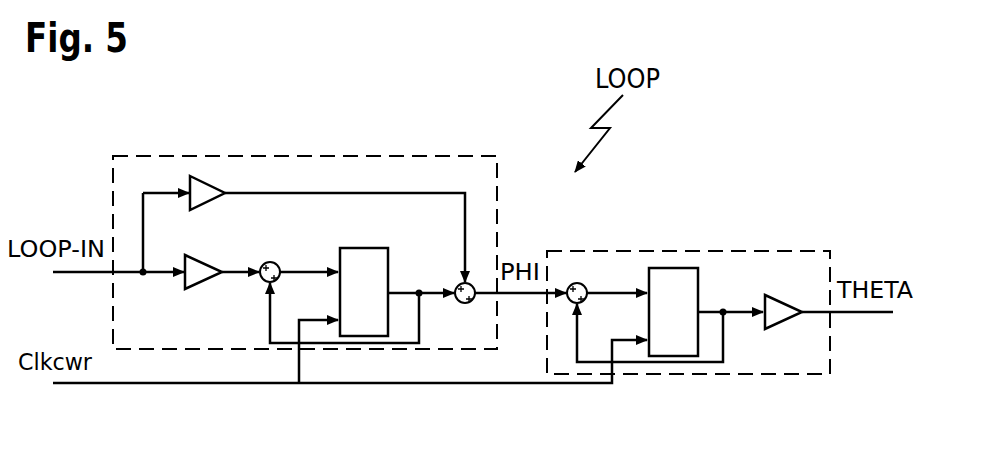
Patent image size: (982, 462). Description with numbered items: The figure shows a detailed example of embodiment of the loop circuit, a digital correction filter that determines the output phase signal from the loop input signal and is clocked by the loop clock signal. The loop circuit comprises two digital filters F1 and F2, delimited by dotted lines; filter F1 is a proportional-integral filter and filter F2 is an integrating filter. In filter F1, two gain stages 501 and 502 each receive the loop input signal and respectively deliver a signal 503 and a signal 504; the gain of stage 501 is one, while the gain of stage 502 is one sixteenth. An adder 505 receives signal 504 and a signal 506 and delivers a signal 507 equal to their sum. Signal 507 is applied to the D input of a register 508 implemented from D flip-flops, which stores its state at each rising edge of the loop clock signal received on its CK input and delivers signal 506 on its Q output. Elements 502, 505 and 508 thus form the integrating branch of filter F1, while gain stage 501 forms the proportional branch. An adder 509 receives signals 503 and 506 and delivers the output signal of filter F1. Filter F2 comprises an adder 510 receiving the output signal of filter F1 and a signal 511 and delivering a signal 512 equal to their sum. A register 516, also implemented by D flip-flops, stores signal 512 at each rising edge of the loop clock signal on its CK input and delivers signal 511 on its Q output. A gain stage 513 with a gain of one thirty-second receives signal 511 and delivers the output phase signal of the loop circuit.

The gain stage 501 is at (203, 188).
The gain stage 502 is at (192, 285).
The signal 503 is at (272, 193).
The signal 504 is at (233, 273).
The adder 505 is at (253, 288).
The signal 506 is at (420, 322).
The signal 507 is at (300, 272).
The register 508 is at (375, 253).
The adder 509 is at (463, 303).
The adder 510 is at (576, 283).
The signal 511 is at (723, 352).
The signal 512 is at (608, 292).
The gain stage 513 is at (773, 307).
The register 516 is at (683, 277).
The filter F1 is at (497, 182).
The filter F2 is at (661, 250).